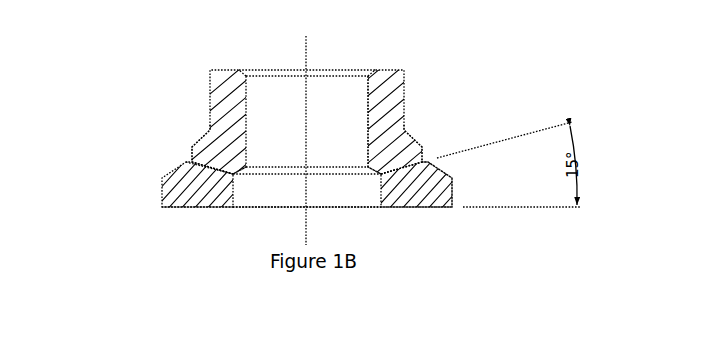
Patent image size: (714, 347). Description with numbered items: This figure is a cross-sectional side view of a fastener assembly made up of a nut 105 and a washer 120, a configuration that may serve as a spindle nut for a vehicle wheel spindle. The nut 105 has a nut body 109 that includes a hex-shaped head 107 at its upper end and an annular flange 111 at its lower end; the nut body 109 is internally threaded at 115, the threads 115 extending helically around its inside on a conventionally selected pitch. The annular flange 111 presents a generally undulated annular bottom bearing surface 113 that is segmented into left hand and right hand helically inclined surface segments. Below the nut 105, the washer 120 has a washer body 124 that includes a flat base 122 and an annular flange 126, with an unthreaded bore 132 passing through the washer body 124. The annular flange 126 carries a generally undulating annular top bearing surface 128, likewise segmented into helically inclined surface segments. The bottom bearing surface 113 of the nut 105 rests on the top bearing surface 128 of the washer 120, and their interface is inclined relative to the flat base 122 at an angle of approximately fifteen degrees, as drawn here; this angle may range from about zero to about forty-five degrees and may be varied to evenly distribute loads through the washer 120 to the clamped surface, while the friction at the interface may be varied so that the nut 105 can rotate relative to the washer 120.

The nut 105 is at (393, 89).
The hex-shaped head 107 is at (406, 114).
The nut body 109 is at (221, 100).
The annular flange 111 is at (200, 156).
The annular bottom bearing surface 113 is at (217, 163).
The threads 115 is at (367, 86).
The washer 120 is at (433, 203).
The flat base 122 is at (392, 209).
The washer body 124 is at (418, 204).
The annular flange 126 is at (170, 205).
The annular top bearing surface 128 is at (216, 176).
The unthreaded bore 132 is at (341, 193).